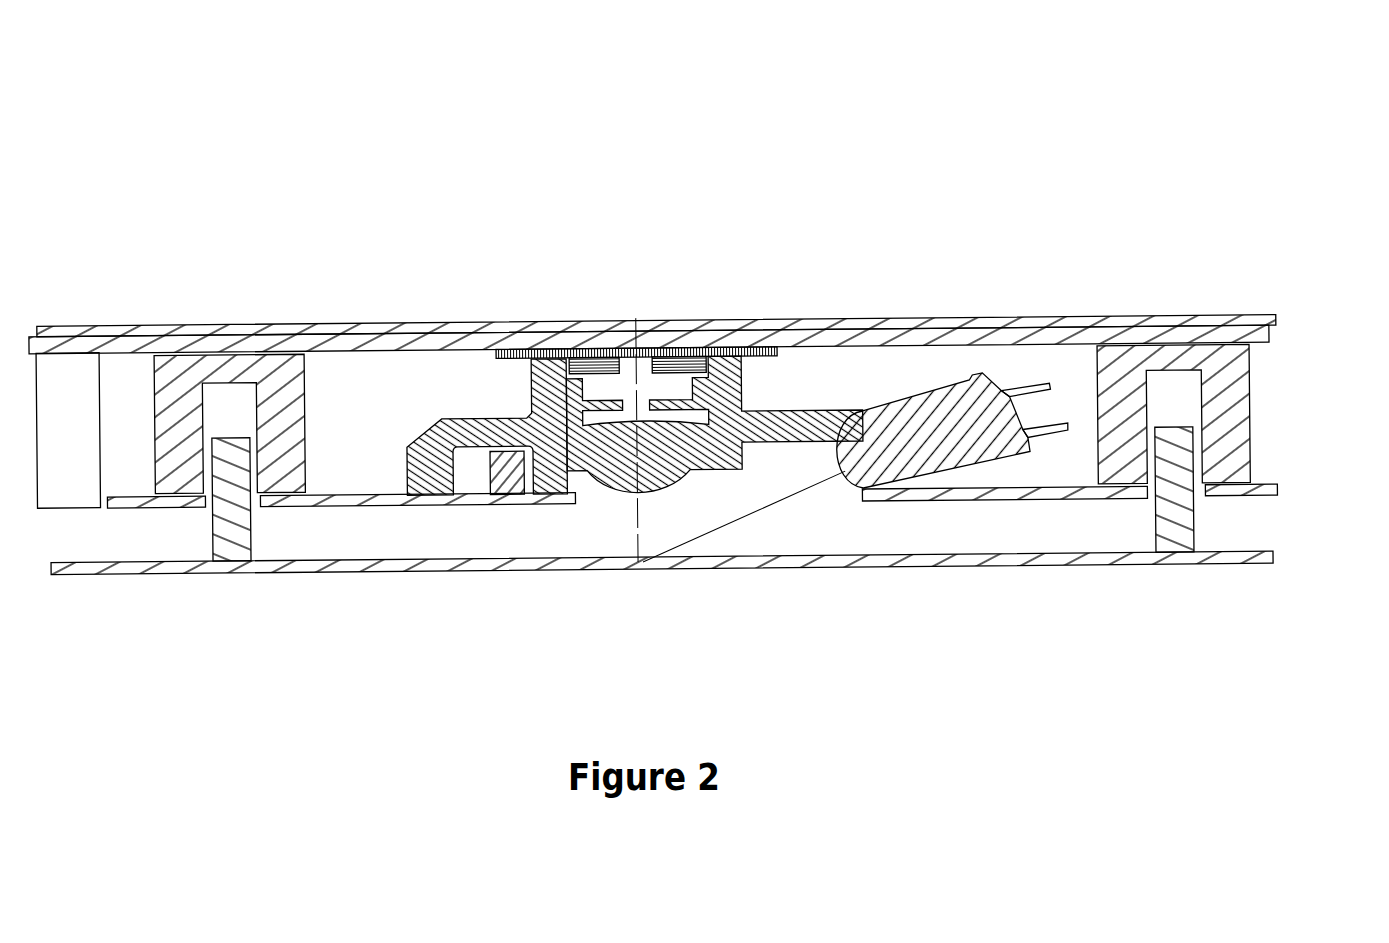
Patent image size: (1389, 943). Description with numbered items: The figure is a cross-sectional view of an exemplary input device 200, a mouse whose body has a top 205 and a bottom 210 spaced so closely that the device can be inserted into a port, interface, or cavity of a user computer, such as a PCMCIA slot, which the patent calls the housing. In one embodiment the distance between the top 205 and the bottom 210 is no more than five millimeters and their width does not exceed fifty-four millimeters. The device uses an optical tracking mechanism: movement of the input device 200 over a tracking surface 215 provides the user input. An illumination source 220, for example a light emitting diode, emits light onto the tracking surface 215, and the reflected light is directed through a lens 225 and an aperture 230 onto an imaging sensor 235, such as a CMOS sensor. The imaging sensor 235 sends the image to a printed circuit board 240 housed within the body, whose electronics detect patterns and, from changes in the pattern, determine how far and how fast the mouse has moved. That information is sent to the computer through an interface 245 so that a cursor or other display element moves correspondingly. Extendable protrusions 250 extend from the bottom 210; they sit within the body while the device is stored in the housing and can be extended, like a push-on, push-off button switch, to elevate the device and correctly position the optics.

The input device 200 is at (655, 205).
The top 205 is at (1137, 322).
The bottom 210 is at (1272, 487).
The tracking surface 215 is at (157, 563).
The illumination source 220 is at (967, 417).
The lens 225 is at (533, 400).
The aperture 230 is at (617, 450).
The imaging sensor 235 is at (650, 357).
The printed circuit board 240 is at (207, 343).
The interface 245 is at (68, 431).
The extendable protrusions 250 is at (1177, 512).